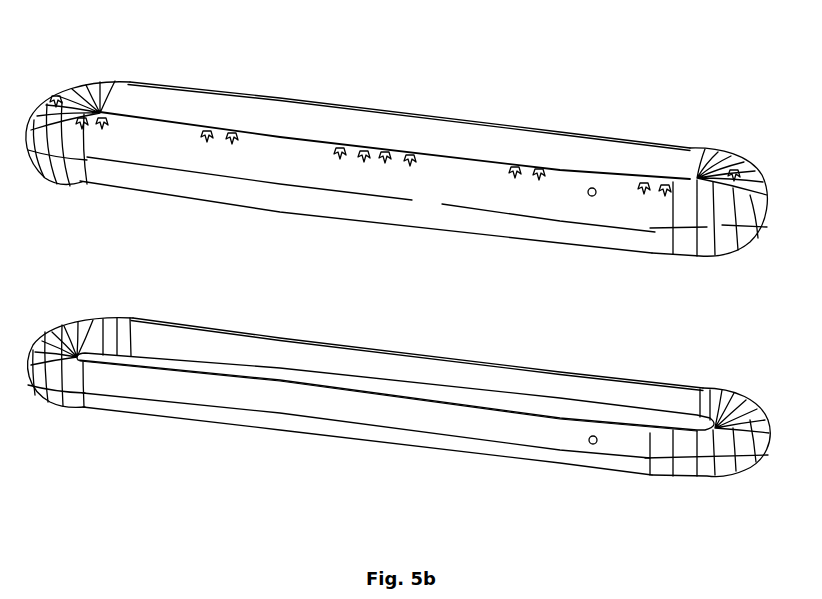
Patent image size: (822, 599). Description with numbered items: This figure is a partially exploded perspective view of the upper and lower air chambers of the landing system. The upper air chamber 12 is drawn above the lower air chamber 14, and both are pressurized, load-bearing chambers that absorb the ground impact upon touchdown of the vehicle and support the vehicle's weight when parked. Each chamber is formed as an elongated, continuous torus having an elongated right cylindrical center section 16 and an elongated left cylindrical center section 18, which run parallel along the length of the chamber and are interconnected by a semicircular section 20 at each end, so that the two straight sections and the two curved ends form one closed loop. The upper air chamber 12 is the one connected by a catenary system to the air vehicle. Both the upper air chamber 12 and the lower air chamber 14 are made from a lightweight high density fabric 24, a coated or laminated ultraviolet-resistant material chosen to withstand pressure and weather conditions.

The upper air chamber 12 is at (757, 165).
The lower air chamber 14 is at (743, 392).
The right cylindrical center section 16 is at (487, 120).
The left cylindrical center section 18 is at (442, 215).
The semicircular section 20 is at (72, 88).
The lightweight high density fabric 24 is at (592, 197).